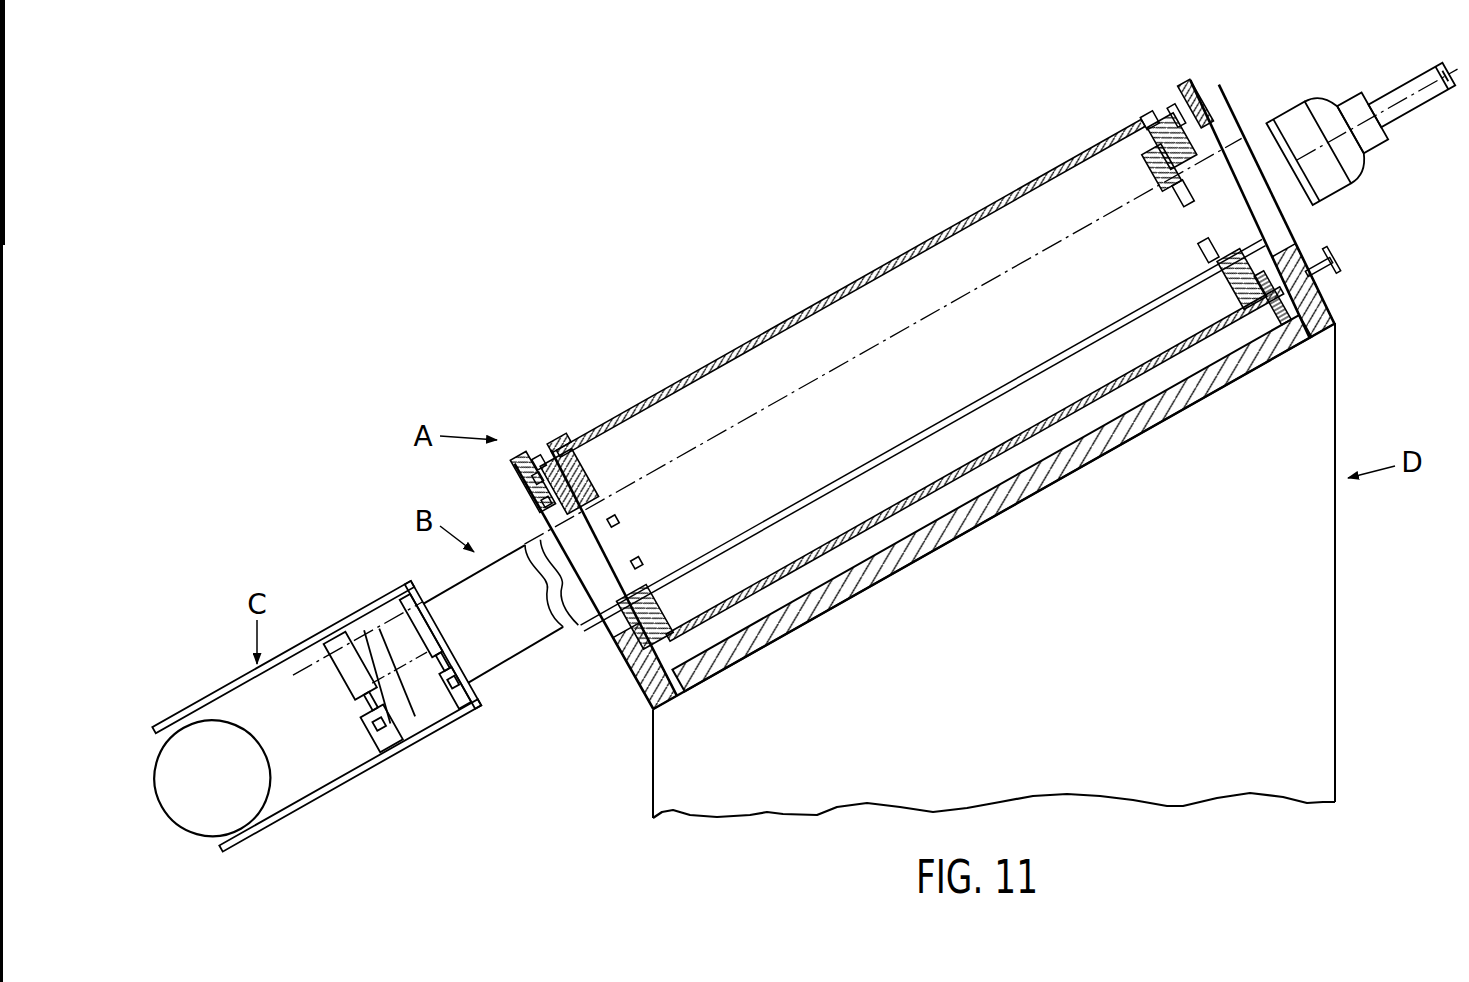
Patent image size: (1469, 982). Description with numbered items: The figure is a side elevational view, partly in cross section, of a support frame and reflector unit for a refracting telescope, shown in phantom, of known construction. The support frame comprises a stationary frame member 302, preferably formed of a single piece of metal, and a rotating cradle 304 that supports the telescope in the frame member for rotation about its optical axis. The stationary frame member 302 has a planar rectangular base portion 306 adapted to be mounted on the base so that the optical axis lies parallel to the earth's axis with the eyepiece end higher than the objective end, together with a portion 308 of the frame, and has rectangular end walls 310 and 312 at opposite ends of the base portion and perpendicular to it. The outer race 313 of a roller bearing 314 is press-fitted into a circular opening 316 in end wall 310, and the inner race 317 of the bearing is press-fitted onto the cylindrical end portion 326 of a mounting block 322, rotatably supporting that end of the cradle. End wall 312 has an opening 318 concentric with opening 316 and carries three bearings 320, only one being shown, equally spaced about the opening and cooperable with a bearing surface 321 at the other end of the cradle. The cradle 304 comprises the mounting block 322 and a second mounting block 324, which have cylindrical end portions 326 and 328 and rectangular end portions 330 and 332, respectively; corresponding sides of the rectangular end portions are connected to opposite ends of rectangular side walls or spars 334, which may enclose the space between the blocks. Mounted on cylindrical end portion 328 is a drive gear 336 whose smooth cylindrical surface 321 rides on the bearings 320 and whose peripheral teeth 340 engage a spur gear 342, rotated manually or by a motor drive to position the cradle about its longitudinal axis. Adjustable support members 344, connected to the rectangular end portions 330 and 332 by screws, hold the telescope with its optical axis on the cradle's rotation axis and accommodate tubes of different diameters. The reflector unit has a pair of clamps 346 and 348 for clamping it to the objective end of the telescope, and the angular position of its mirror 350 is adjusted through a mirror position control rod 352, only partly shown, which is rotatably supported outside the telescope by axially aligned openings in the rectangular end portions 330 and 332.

The stationary frame member 302 is at (735, 678).
The rotating cradle 304 is at (792, 313).
The base portion 306 is at (933, 540).
The side wall / base of block 308 is at (1040, 487).
The end wall 310 is at (527, 452).
The end wall 312 is at (1204, 84).
The outer race 313 is at (545, 502).
The roller bearing 314 is at (538, 474).
The circular opening 316 is at (546, 458).
The inner race 317 is at (615, 516).
The opening 318 is at (1208, 138).
The bearings 320 is at (1168, 118).
The bearing surface 321 is at (1264, 124).
The mounting block 322 is at (654, 530).
The mounting block 324 is at (1196, 236).
The cylindrical end portion 326 is at (565, 522).
The cylindrical end portion 328 is at (1198, 197).
The rectangular end portion 330 is at (574, 442).
The rectangular end portion 332 is at (1146, 121).
The side walls or spars 334 is at (965, 226).
The drive gear 336 is at (1298, 238).
The peripheral teeth 340 is at (1172, 112).
The spur gear 342 is at (1298, 322).
The support members 344 is at (590, 490).
The clamp 346 is at (327, 678).
The clamp 348 is at (422, 617).
The mirror 350 is at (210, 744).
The mirror position control rod 352 is at (813, 500).